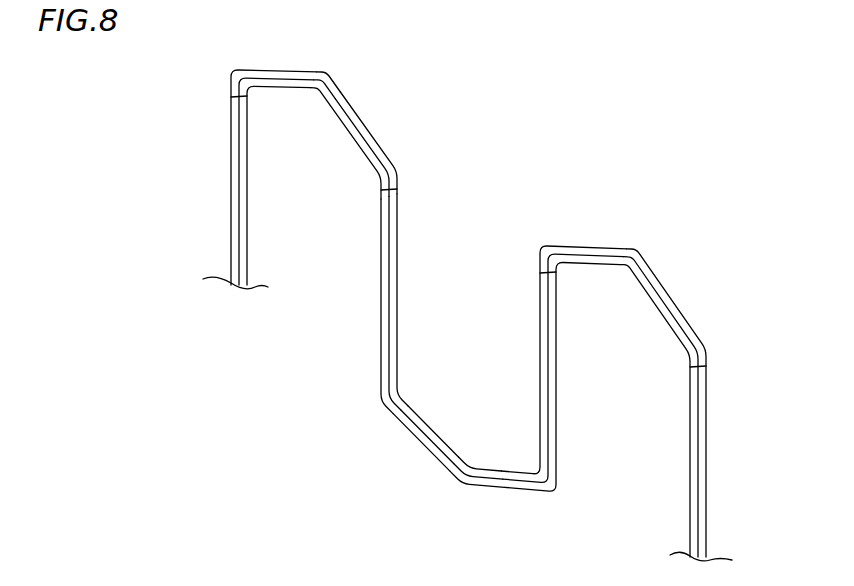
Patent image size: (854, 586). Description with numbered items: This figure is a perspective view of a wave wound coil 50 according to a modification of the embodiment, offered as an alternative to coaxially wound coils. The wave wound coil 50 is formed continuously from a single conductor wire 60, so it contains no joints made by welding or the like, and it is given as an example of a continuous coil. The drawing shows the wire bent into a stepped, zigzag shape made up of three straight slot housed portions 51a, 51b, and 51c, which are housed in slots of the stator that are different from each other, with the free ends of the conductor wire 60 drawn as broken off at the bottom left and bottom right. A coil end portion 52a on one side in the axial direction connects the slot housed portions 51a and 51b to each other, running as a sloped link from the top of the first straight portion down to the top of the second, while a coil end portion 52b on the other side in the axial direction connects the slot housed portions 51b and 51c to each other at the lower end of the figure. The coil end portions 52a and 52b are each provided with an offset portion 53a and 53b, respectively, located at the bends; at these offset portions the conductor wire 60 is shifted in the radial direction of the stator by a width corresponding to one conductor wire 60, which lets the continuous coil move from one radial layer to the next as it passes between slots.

The wave wound coil 50 is at (442, 289).
The slot housed portion 51a is at (230, 197).
The slot housed portion 51b is at (387, 288).
The slot housed portion 51c is at (547, 387).
The coil end portion 52a is at (363, 130).
The coil end portion 52b is at (410, 431).
The offset portion 53a is at (330, 78).
The offset portion 53b is at (466, 478).
The conductor wire 60 is at (230, 262).